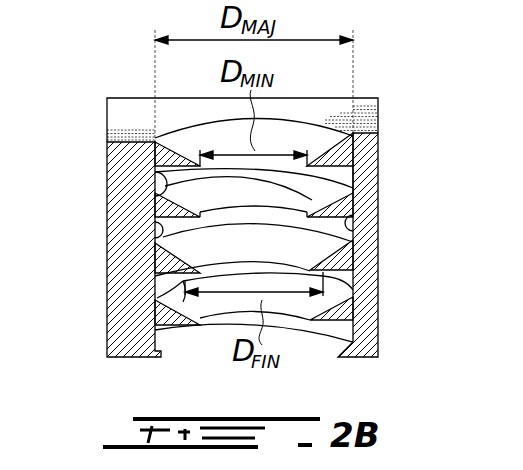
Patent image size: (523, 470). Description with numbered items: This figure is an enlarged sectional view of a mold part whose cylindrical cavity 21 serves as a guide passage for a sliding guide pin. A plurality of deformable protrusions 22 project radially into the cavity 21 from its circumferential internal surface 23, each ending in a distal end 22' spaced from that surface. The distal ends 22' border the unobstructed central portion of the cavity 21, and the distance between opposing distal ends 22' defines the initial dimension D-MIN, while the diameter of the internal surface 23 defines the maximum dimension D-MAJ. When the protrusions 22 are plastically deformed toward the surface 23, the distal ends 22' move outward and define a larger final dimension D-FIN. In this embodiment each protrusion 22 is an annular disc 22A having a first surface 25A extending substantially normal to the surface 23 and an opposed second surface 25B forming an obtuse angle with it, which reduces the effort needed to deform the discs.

The cavity 21 is at (329, 124).
The deformable protrusion 22 is at (321, 233).
The annular disc 22A is at (372, 298).
The distal end 22' is at (294, 286).
The internal surface 23 is at (155, 184).
The first surface 25A is at (155, 230).
The second surface 25B is at (157, 298).